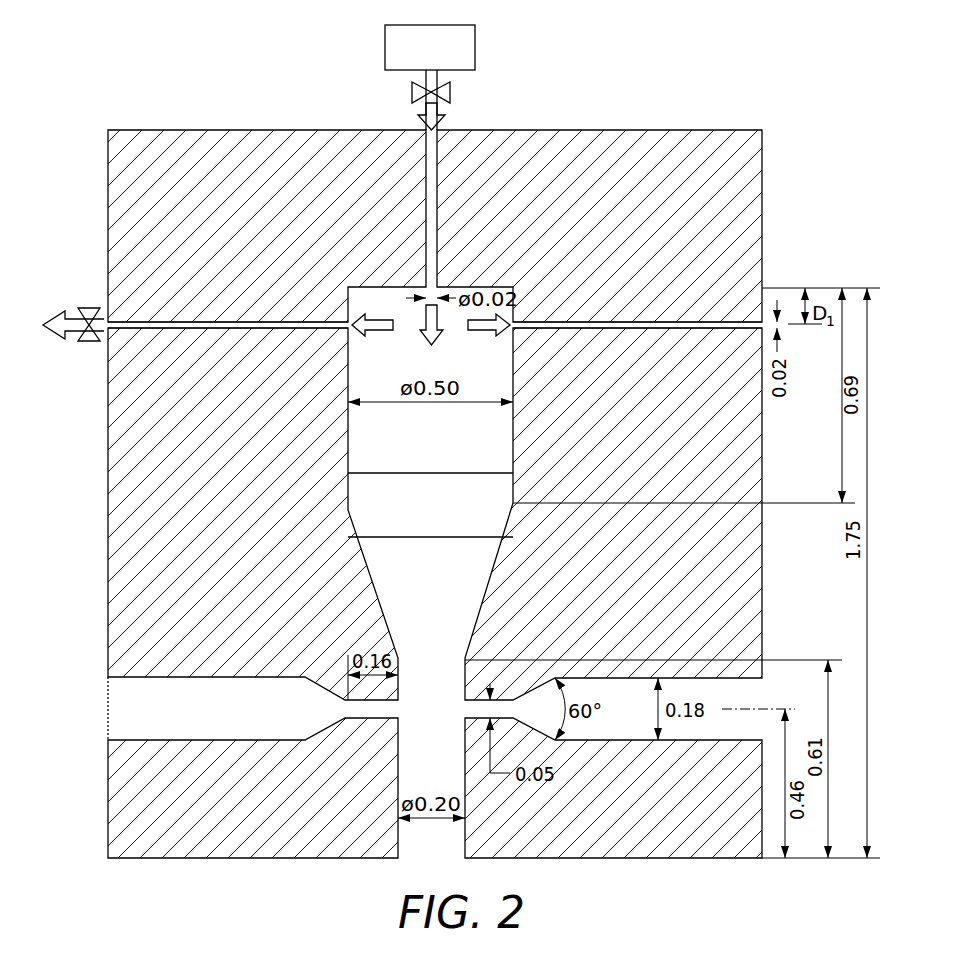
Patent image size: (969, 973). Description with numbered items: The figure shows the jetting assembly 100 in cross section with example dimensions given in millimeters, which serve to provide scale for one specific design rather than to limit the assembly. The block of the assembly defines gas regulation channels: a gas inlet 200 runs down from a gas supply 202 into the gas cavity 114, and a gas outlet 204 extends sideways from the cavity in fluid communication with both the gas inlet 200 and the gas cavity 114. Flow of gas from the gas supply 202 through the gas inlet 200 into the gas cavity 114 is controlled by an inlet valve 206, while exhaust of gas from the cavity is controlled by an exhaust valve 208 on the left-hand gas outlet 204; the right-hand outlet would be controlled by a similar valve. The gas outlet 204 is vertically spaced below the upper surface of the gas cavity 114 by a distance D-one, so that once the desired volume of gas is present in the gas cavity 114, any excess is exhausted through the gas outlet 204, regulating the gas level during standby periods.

The jetting assembly 100 is at (214, 56).
The gas cavity 114 is at (402, 309).
The gas inlet 200 is at (440, 176).
The gas supply 202 is at (447, 61).
The gas outlet 204 is at (140, 322).
The inlet valve 206 is at (410, 92).
The exhaust valve 208 is at (89, 343).